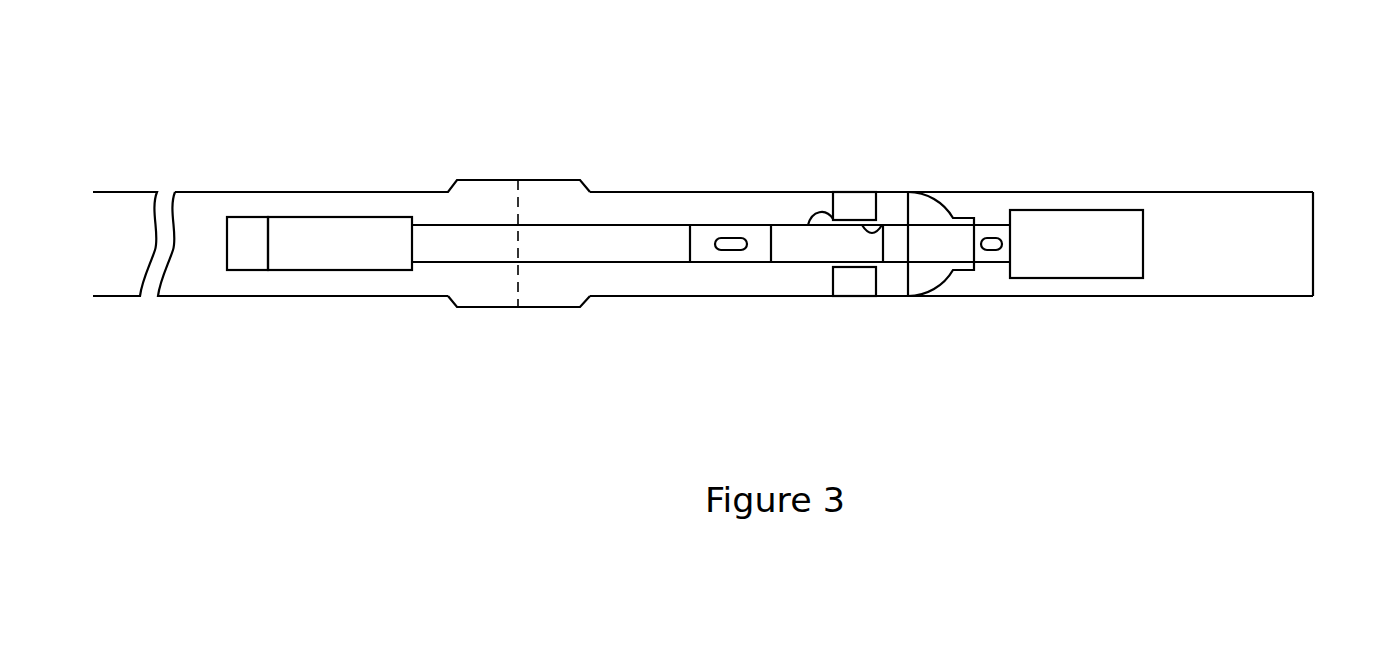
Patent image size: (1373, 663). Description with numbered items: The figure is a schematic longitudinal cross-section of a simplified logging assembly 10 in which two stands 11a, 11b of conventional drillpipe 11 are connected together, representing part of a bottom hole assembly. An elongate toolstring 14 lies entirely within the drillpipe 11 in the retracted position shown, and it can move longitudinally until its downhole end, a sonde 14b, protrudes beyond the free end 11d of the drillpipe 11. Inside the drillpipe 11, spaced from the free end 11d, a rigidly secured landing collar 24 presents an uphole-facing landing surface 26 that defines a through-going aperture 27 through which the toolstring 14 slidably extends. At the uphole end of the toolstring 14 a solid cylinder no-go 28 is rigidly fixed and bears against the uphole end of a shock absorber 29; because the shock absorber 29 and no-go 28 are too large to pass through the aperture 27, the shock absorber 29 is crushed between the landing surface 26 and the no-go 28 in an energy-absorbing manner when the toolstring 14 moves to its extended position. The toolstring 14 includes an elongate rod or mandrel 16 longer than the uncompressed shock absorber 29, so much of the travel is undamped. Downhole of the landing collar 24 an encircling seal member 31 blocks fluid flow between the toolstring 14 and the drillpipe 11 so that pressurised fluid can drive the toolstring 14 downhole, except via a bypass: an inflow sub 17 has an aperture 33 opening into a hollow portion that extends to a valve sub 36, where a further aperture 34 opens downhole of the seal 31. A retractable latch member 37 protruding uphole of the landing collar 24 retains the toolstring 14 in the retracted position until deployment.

The logging assembly 10 is at (956, 158).
The drillpipe 11 is at (257, 298).
The stand of drillpipe 11a is at (355, 192).
The stand of drillpipe 11b is at (1090, 190).
The free end of the drillpipe 11d is at (1314, 226).
The toolstring 14 is at (642, 226).
The sonde 14b is at (1137, 215).
The rod or mandrel 16 is at (541, 237).
The inflow sub 17 is at (708, 240).
The landing collar 24 is at (860, 200).
The landing surface 26 is at (826, 214).
The through-going aperture 27 is at (876, 232).
The no-go 28 is at (232, 228).
The shock absorber 29 is at (345, 263).
The seal member 31 is at (962, 195).
The aperture 33 is at (730, 253).
The further aperture 34 is at (992, 253).
The valve sub 36 is at (1000, 222).
The latch member 37 is at (818, 230).